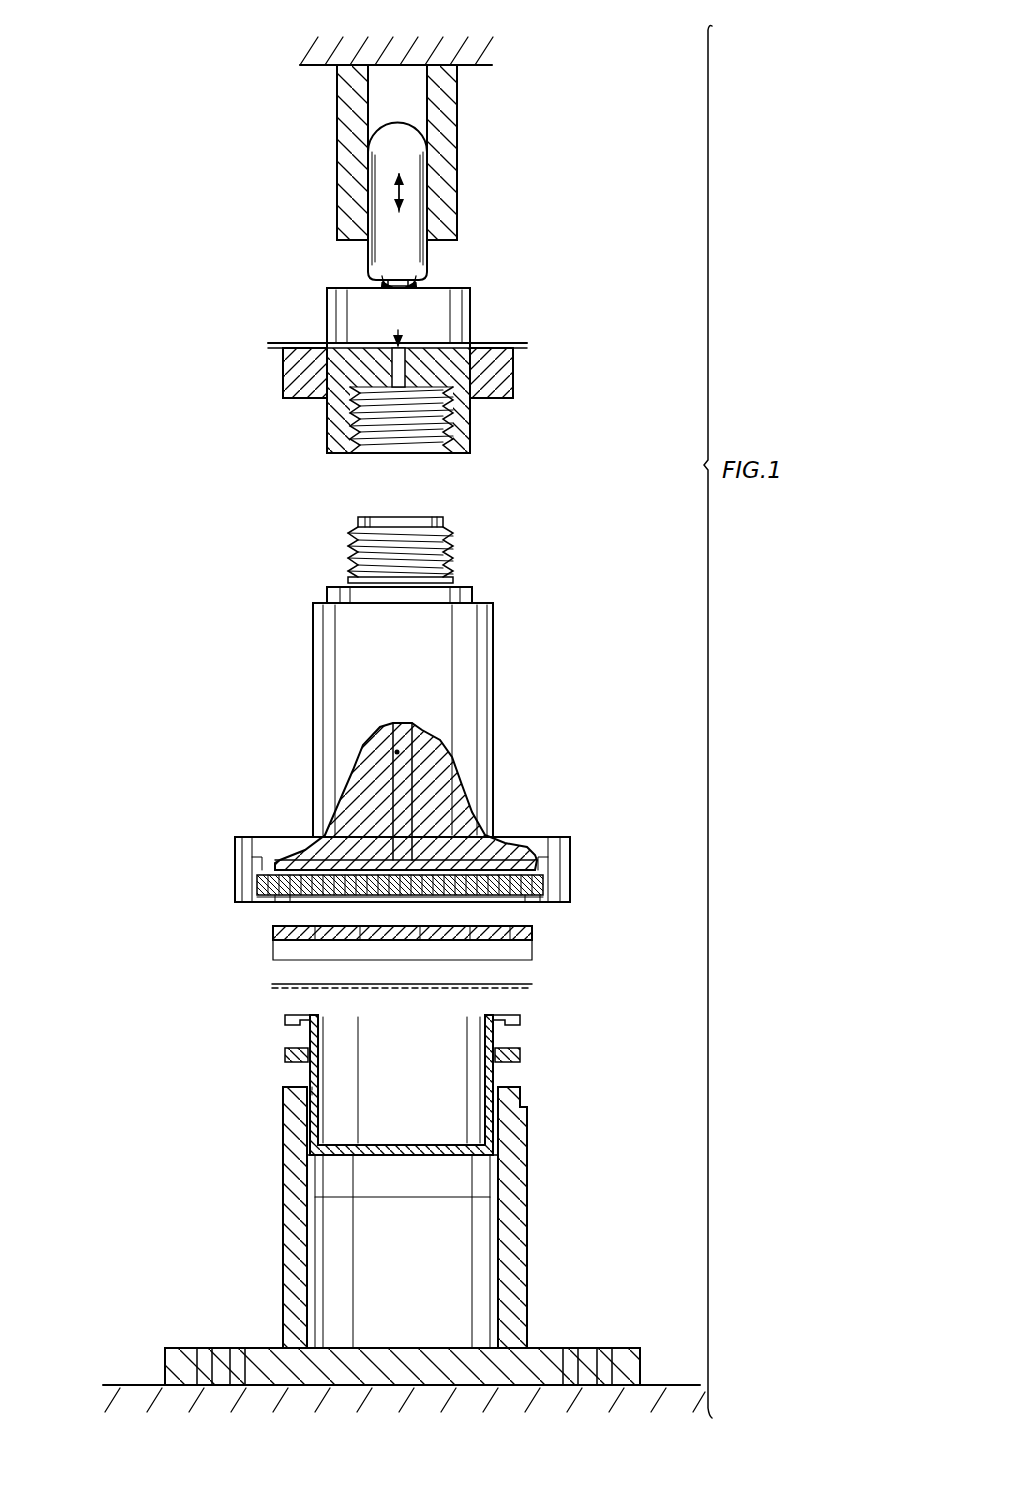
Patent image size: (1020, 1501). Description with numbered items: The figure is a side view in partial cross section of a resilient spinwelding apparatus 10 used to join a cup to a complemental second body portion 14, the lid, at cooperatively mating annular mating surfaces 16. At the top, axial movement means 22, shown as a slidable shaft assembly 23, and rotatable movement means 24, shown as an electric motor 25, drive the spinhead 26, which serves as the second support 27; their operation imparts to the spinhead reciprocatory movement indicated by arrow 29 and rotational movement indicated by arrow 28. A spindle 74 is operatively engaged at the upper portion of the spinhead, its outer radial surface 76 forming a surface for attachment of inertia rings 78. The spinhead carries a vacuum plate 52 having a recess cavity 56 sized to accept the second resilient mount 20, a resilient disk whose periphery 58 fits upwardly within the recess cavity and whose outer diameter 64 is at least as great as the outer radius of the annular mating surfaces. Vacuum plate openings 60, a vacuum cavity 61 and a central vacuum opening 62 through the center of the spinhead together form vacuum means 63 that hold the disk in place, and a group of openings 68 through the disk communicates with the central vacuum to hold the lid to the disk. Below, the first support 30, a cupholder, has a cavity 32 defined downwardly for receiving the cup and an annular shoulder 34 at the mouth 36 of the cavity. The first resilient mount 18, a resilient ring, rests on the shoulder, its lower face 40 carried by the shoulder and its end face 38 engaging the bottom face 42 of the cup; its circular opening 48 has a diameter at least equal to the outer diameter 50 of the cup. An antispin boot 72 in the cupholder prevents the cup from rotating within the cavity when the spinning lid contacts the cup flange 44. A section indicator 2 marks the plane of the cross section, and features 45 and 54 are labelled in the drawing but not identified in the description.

The resilient spinwelding apparatus 10 is at (150, 210).
The axial movement means 22 is at (460, 130).
The slidable shaft assembly 23 is at (368, 160).
The rotatable movement means 24 is at (364, 258).
The electric motor 25 is at (420, 192).
The central vacuum opening 62 is at (392, 352).
The inertia rings 78 is at (512, 372).
The outer radial surface 76 is at (327, 432).
The spindle 74 is at (473, 430).
The section line 2- 2 is at (142, 416).
The vacuum means 63 is at (176, 535).
The arrow 29 is at (291, 619).
The spinhead 26 is at (500, 632).
The second support 27 is at (313, 772).
The arrow 28 is at (468, 693).
The vacuum cavity 61 is at (470, 866).
The vacuum plate openings 60 is at (490, 868).
The flange upper portion 54 is at (240, 882).
The vacuum plate 52 is at (235, 895).
The recess cavity 56 is at (298, 900).
The periphery 58 is at (535, 933).
The group of openings 68 is at (487, 925).
The second resilient mount 20 is at (270, 935).
The outer diameter 64 is at (487, 958).
The cavity 32 is at (270, 944).
The second body portion 14 is at (270, 986).
The membrane edge 45 is at (533, 986).
The annular mating surfaces 16 is at (292, 1000).
The cup flange 44 is at (508, 1007).
The bottom face 42 is at (293, 1028).
The end face 38 is at (508, 1040).
The lower face 40 is at (513, 1062).
The shoulder 34 is at (312, 1090).
The mouth 36 is at (312, 1088).
The first resilient mount 18 is at (287, 1062).
The circular opening 48 is at (500, 1087).
The antispin boot 72 is at (508, 1108).
The first support 30 is at (282, 1185).
The outer diameter 50 is at (402, 1198).